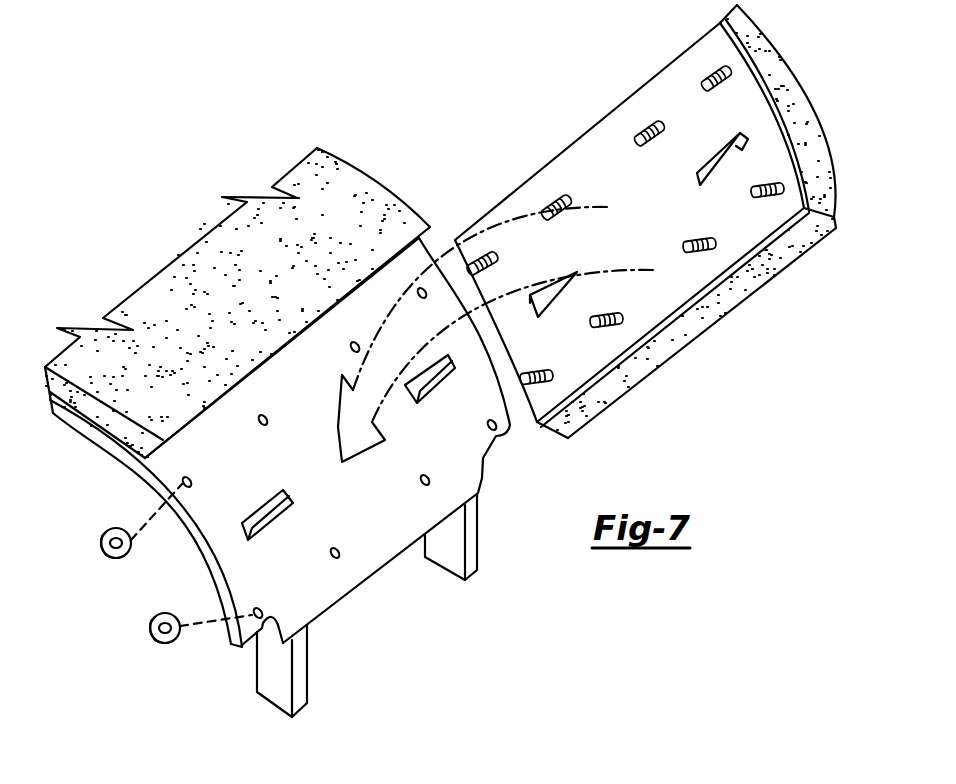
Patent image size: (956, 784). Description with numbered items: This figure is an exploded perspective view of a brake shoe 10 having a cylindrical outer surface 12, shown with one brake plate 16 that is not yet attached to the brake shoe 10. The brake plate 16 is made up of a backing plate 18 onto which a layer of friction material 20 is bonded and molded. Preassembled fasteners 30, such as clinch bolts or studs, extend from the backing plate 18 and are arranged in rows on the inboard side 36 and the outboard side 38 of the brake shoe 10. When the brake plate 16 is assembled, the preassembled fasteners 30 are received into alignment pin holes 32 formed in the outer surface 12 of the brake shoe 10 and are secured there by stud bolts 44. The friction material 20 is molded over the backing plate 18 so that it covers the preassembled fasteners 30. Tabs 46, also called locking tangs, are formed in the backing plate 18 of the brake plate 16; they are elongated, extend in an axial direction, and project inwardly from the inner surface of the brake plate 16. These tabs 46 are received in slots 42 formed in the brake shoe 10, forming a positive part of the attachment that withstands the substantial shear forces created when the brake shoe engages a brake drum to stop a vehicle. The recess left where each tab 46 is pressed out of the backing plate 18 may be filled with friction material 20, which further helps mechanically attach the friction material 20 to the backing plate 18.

The brake shoe 10 is at (208, 682).
The cylindrical outer surface 12 is at (395, 538).
The brake plate 16 is at (688, 34).
The backing plate 18 is at (577, 157).
The friction material 20 is at (722, 303).
The preassembled fasteners 30 is at (597, 328).
The alignment pin holes 32 is at (496, 427).
The inboard side 36 is at (380, 593).
The outboard side 38 is at (188, 545).
The slots 42 is at (281, 492).
The stud bolts 44 is at (102, 528).
The tabs 46 is at (727, 143).